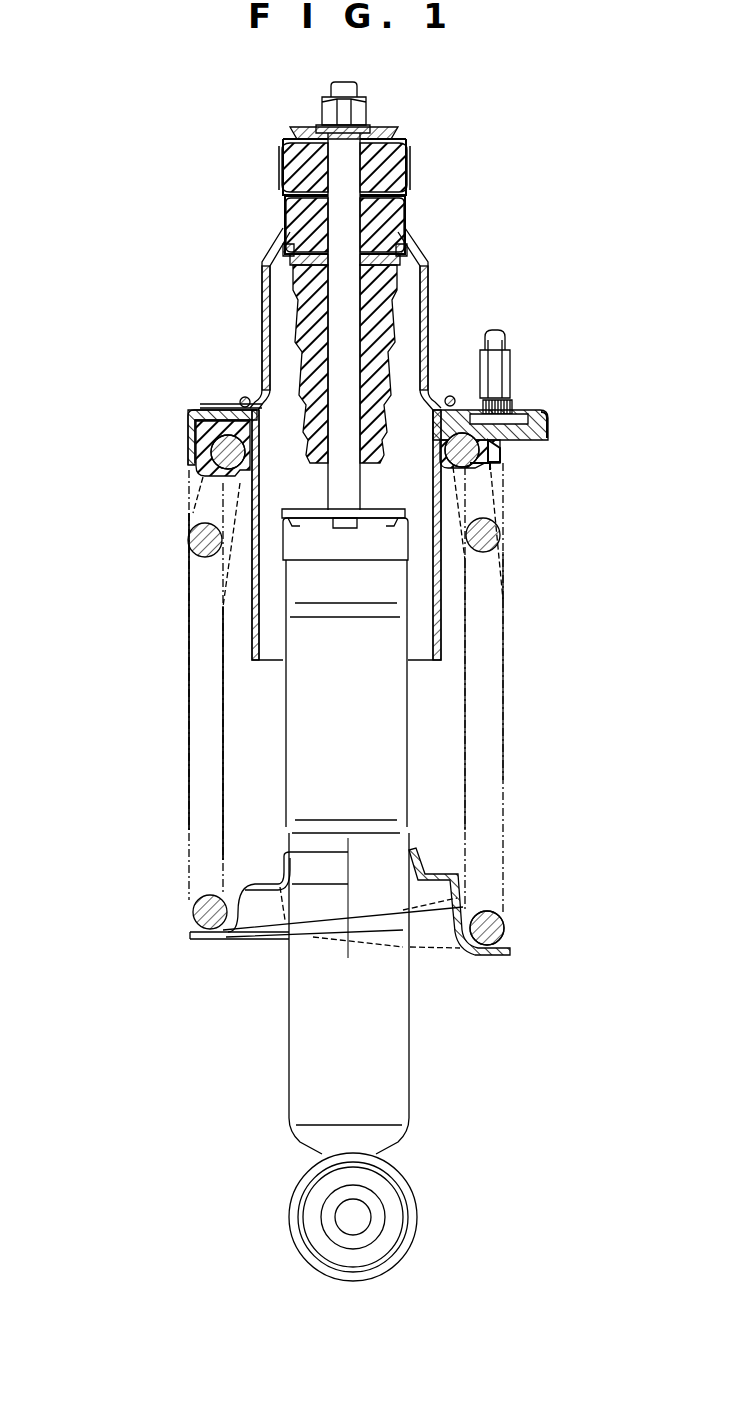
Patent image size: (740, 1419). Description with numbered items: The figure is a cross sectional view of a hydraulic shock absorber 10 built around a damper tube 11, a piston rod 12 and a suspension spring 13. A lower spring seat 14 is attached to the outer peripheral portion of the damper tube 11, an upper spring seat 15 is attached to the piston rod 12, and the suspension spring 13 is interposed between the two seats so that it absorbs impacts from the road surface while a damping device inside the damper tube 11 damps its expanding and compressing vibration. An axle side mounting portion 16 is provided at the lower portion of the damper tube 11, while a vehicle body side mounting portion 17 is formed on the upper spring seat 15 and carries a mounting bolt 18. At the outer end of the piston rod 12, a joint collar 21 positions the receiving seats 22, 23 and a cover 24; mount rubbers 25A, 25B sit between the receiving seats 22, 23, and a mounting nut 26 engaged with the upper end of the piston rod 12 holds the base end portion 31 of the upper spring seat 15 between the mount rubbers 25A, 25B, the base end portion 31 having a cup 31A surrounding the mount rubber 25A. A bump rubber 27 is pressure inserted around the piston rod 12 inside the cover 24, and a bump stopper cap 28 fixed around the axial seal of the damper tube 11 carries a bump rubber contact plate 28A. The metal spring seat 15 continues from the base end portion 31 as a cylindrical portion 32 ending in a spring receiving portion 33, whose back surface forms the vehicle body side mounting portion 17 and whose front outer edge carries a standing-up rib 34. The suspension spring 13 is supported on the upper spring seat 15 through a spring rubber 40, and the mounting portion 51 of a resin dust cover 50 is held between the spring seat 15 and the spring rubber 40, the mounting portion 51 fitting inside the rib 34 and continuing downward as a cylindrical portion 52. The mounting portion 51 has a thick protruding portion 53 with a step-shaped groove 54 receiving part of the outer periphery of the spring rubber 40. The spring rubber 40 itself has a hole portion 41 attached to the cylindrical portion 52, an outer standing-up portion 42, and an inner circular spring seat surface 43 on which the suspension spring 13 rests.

The hydraulic shock absorber 10 is at (83, 175).
The damper tube 11 is at (397, 733).
The piston rod 12 is at (335, 490).
The suspension spring 13 is at (191, 548).
The lower spring seat 14 is at (201, 940).
The upper spring seat 15 is at (203, 407).
The axle side mounting portion 16 is at (316, 1228).
The vehicle body side mounting portion 17 is at (527, 407).
The mounting bolt 18 is at (503, 363).
The joint collar 21 is at (410, 171).
The receiving seat 22 is at (396, 133).
The receiving seat 23 is at (388, 266).
The cover 24 is at (402, 250).
The mount rubber 25A is at (284, 162).
The mount rubber 25B is at (286, 224).
The mounting nut 26 is at (325, 113).
The bump rubber 27 is at (298, 334).
The bump stopper cap 28 is at (401, 548).
The bump rubber contact plate 28A is at (408, 513).
The base end portion 31 is at (286, 198).
The cup 31A is at (282, 188).
The cylindrical portion 32 is at (263, 283).
The spring receiving portion 33 is at (235, 405).
The standing-up rib 34 is at (191, 452).
The spring rubber 40 is at (199, 443).
The hole portion 41 is at (444, 421).
The standing-up portion 42 is at (488, 455).
The spring seat surface 43 is at (479, 461).
The dust cover 50 is at (243, 482).
The mounting portion 51 is at (196, 419).
The cylindrical portion 52 is at (254, 613).
The protruding portion 53 is at (541, 433).
The step-shaped groove 54 is at (498, 447).